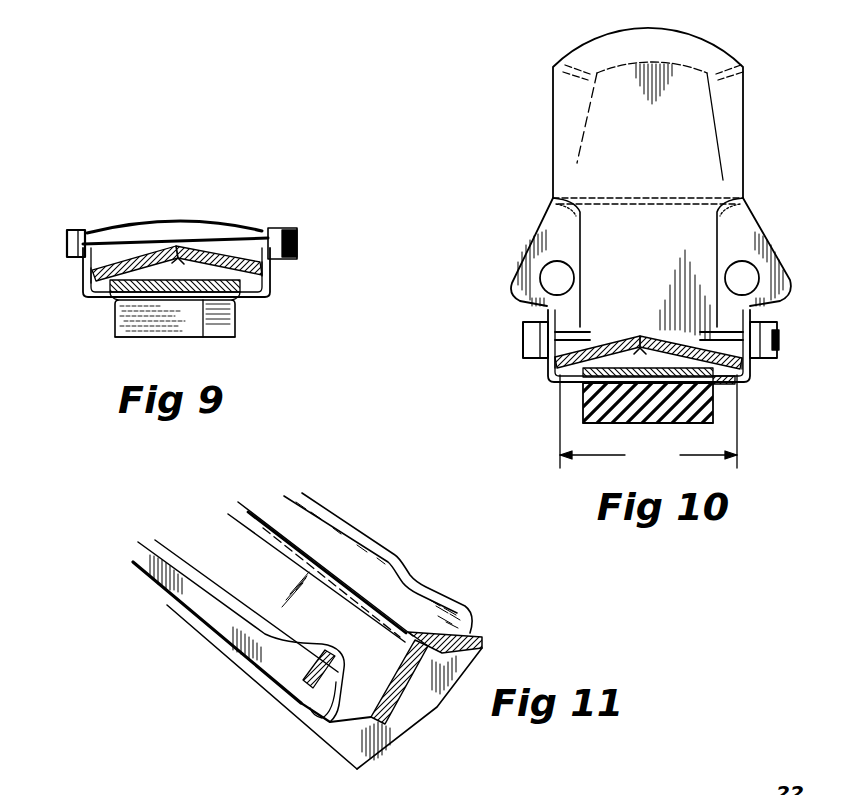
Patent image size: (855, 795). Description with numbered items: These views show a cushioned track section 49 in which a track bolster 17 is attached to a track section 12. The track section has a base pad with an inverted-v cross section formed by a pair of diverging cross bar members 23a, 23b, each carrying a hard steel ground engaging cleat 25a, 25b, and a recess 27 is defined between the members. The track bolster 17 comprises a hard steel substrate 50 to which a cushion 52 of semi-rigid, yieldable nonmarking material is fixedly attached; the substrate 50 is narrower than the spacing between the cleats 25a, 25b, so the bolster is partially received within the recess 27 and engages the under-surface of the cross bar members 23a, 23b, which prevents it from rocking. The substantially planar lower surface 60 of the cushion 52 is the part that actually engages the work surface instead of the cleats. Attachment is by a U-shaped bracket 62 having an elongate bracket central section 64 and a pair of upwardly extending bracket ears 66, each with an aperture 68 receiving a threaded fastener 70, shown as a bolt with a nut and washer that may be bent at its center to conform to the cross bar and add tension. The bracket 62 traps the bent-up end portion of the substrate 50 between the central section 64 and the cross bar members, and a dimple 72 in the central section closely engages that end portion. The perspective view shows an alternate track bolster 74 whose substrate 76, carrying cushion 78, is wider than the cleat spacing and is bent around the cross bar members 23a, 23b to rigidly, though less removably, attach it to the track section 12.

In FIG. 11, the track section 12 is at (274, 491).
In FIG. 9, the track bolster 17 is at (112, 341).
In FIG. 10, the track bolster 17 is at (624, 426).
In FIG. 9, the diverging cross bar member 23a is at (108, 257).
In FIG. 10, the diverging cross bar member 23a is at (590, 345).
In FIG. 9, the diverging cross bar member 23b is at (184, 258).
In FIG. 10, the diverging cross bar member 23b is at (707, 347).
In FIG. 9, the ground engaging cleat 25a is at (88, 280).
In FIG. 10, the ground engaging cleat 25a is at (552, 372).
In FIG. 9, the ground engaging cleat 25b is at (264, 277).
In FIG. 10, the ground engaging cleat 25b is at (748, 373).
In FIG. 9, the recess 27 is at (180, 258).
In FIG. 10, the recess 27 is at (637, 345).
In FIG. 10, the cushioned track section 49 is at (532, 88).
In FIG. 10, the substrate 50 is at (722, 387).
In FIG. 9, the cushion 52 is at (117, 328).
In FIG. 10, the cushion 52 is at (713, 413).
In FIG. 9, the lower surface 60 is at (153, 337).
In FIG. 10, the lower surface 60 is at (587, 425).
In FIG. 9, the bracket 62 is at (276, 298).
In FIG. 10, the bracket 62 is at (530, 290).
In FIG. 9, the bracket central section 64 is at (247, 296).
In FIG. 10, the bracket central section 64 is at (572, 393).
In FIG. 9, the bracket ear 66 is at (82, 230).
In FIG. 10, the bracket ear 66 is at (548, 310).
In FIG. 9, the aperture 68 is at (97, 232).
In FIG. 9, the threaded fastener 70 is at (292, 236).
In FIG. 10, the threaded fastener 70 is at (523, 343).
In FIG. 9, the dimple 72 is at (213, 337).
In FIG. 11, the track bolster 74 is at (448, 574).
In FIG. 11, the substrate 76 is at (440, 687).
In FIG. 11, the cushion 78 is at (403, 717).